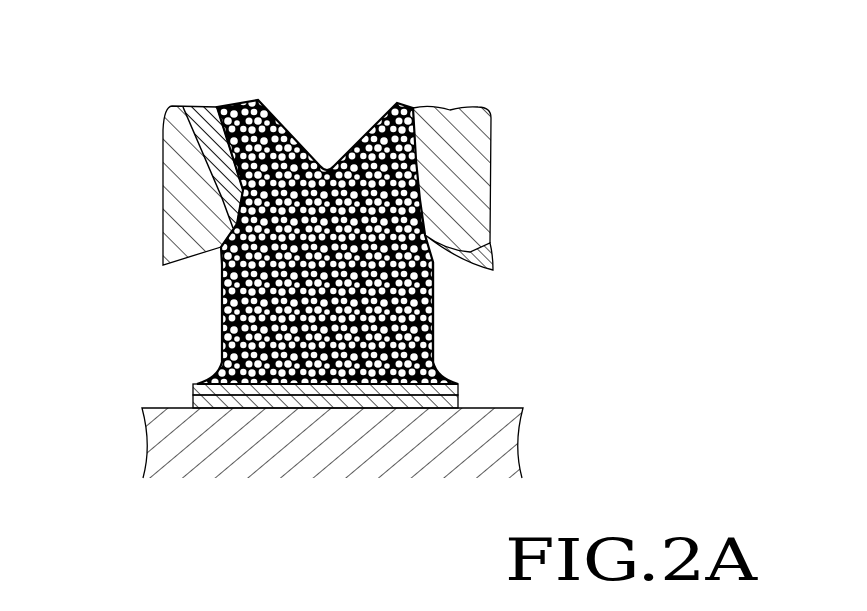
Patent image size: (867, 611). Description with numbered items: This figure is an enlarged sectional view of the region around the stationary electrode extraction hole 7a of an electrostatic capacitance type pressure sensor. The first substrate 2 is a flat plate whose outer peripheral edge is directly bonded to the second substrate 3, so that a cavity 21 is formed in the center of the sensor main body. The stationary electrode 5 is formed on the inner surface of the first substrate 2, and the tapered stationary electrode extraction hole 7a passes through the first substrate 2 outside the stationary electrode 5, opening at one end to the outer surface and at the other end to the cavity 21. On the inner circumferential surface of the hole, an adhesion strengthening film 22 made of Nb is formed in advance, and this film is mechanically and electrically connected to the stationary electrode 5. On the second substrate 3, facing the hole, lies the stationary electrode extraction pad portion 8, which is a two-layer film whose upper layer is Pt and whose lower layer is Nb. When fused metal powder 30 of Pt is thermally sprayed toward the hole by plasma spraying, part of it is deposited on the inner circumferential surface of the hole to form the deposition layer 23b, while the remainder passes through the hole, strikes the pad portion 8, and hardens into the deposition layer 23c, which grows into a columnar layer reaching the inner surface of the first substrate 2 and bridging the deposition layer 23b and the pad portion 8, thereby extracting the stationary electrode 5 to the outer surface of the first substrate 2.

The first substrate 2 is at (367, 138).
The second substrate 3 is at (482, 449).
The stationary electrode 5 is at (480, 257).
The stationary electrode extraction hole 7a is at (186, 107).
The stationary electrode extraction pad portion 8 is at (243, 368).
The element Pt is at (193, 387).
The element Nb is at (192, 403).
The cavity 21 is at (283, 194).
The adhesion strengthening film 22 is at (459, 107).
The deposition layer 23b is at (408, 104).
The deposition layer 23c is at (221, 323).
The metal powder 30 is at (434, 317).